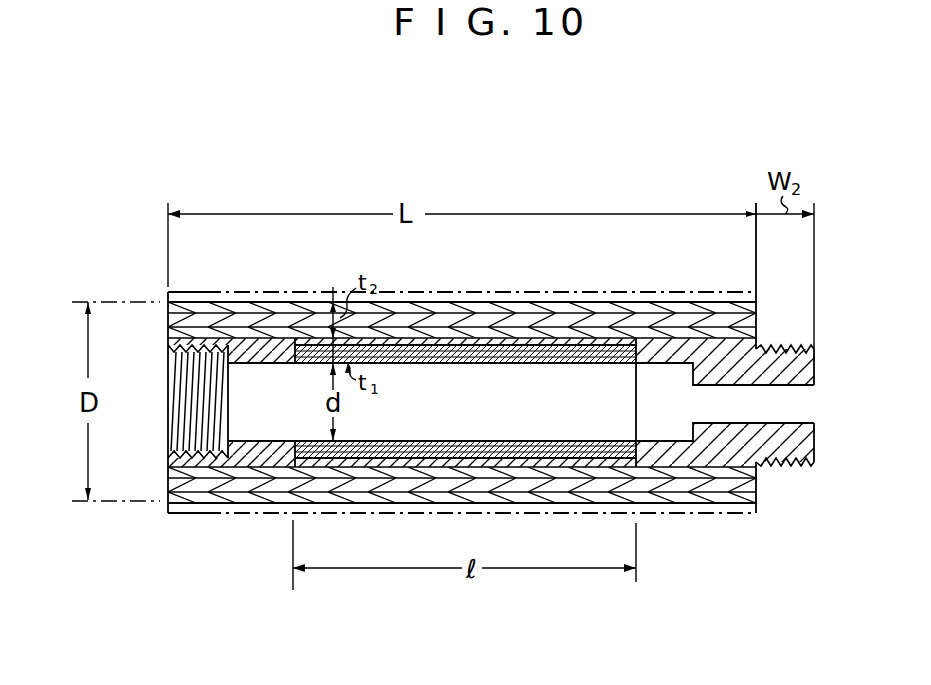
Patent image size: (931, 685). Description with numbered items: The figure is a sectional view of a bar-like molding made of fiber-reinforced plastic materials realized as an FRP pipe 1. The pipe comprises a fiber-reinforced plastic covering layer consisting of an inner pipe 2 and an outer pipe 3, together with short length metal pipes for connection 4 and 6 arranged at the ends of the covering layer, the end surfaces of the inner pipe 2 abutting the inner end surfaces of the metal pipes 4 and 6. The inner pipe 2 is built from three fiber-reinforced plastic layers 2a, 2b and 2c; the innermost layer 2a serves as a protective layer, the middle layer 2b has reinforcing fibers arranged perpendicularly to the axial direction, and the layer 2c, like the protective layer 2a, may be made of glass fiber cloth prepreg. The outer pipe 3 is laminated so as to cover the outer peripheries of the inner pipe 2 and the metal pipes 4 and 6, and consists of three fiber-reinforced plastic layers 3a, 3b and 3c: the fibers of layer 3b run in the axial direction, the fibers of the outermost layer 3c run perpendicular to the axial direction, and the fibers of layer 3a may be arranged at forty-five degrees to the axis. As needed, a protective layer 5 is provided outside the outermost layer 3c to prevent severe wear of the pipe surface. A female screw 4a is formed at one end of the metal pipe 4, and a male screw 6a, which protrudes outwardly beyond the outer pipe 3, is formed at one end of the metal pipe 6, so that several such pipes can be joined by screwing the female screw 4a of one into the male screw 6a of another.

The FRP pipe 1 is at (543, 206).
The inner pipe 2 is at (440, 407).
The protective layer 2a is at (567, 364).
The fiber-reinforced plastic layer 2b is at (518, 364).
The fiber-reinforced plastic layer 2c is at (455, 364).
The outer pipe 3 is at (645, 263).
The fiber-reinforced plastic layer 3a is at (477, 333).
The fiber-reinforced plastic layer 3b is at (541, 322).
The outermost fiber-reinforced plastic layer 3c is at (600, 311).
The short length metal pipe for connection 4 is at (260, 462).
The female screw 4a is at (174, 448).
The protective layer 5 is at (196, 514).
The short length metal pipe for connection 6 is at (718, 462).
The male screw 6a is at (793, 465).